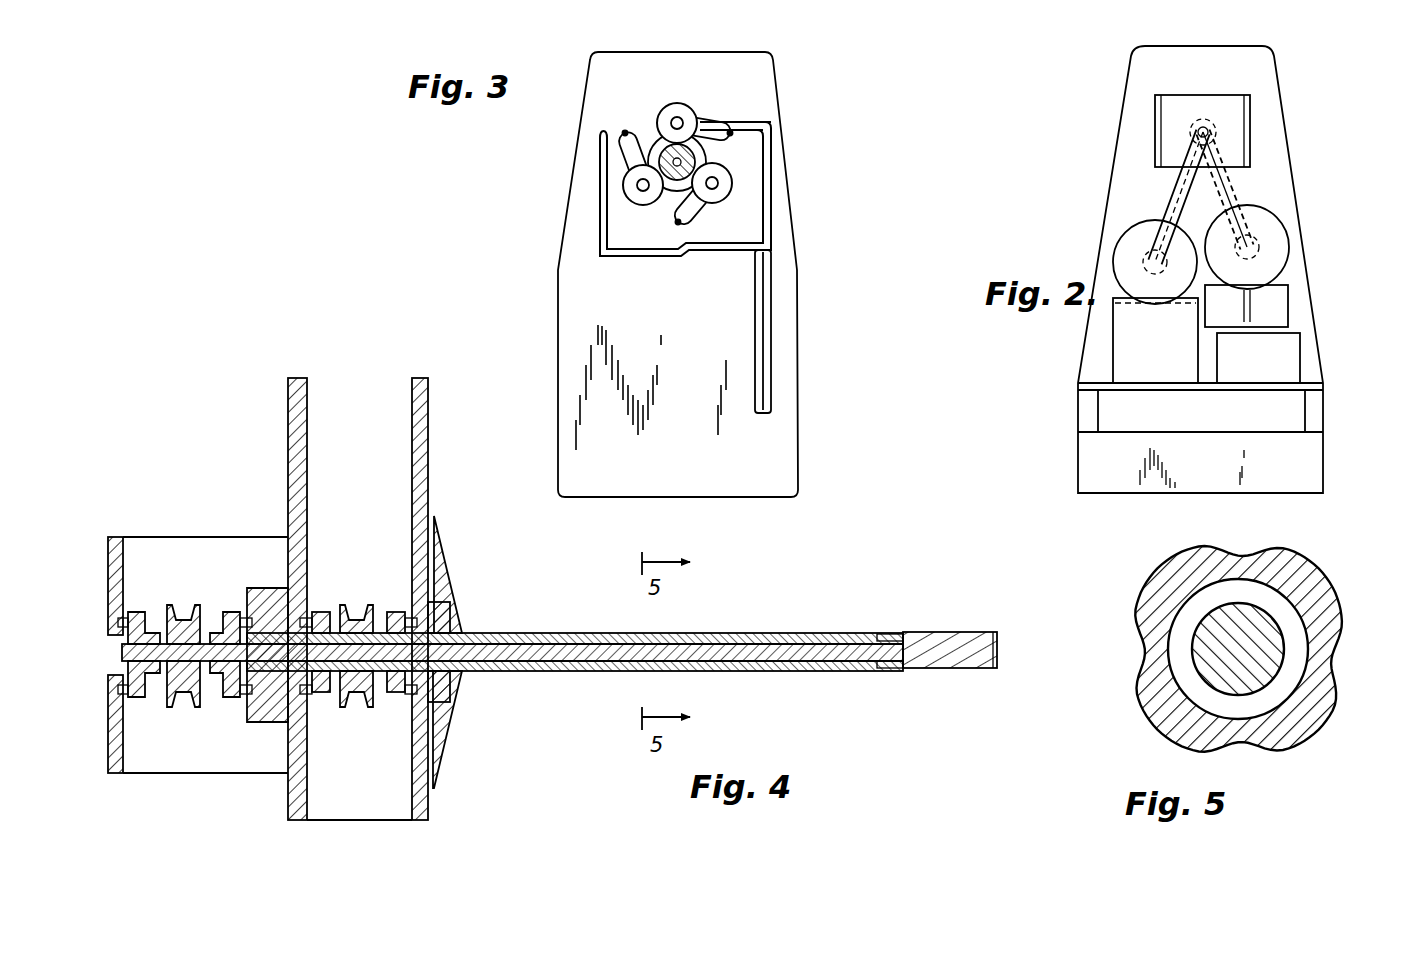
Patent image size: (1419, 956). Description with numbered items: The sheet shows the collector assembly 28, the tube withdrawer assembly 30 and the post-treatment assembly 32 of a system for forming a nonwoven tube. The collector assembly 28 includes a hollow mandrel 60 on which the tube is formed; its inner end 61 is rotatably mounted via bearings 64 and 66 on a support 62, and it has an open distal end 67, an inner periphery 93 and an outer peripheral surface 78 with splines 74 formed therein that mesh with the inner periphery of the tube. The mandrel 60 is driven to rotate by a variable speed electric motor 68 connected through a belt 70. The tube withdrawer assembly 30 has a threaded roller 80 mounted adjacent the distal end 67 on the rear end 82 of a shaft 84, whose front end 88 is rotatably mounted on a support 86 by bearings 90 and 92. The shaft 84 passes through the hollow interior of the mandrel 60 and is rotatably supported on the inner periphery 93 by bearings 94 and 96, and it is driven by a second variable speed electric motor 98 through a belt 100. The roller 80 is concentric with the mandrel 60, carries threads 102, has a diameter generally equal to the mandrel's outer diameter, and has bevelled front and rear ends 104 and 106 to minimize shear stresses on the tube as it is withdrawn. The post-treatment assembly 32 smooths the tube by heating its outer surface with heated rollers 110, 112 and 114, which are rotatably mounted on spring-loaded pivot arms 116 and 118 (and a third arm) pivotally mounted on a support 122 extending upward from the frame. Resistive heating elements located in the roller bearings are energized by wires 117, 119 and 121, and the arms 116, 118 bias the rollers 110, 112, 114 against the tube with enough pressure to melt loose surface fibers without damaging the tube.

In FIG. 4, the collector assembly 28 is at (468, 583).
In FIG. 4, the tube withdrawer assembly 30 is at (246, 518).
In FIG. 3, the post-treatment assembly 32 is at (640, 84).
In FIG. 4, the mandrel 60 is at (754, 629).
In FIG. 5, the mandrel 60 is at (1341, 590).
In FIG. 4, the inner end 61 is at (378, 604).
In FIG. 2, the support 62 is at (1263, 57).
In FIG. 4, the support 62 is at (430, 804).
In FIG. 4, the bearing 64 is at (322, 697).
In FIG. 4, the bearing 66 is at (397, 694).
In FIG. 4, the distal end 67 is at (882, 669).
In FIG. 2, the variable speed electric motor 68 is at (1130, 232).
In FIG. 2, the belt 70 is at (1168, 182).
In FIG. 5, the splines 74 is at (1336, 650).
In FIG. 4, the outer peripheral surface 78 is at (545, 672).
In FIG. 5, the outer peripheral surface 78 is at (1175, 566).
In FIG. 4, the threaded roller 80 is at (957, 675).
In FIG. 4, the rear end 82 is at (905, 670).
In FIG. 4, the shaft 84 is at (562, 630).
In FIG. 5, the shaft 84 is at (1163, 702).
In FIG. 2, the support 86 is at (1237, 116).
In FIG. 4, the support 86 is at (117, 540).
In FIG. 4, the front end 88 is at (122, 653).
In FIG. 4, the bearing 90 is at (133, 698).
In FIG. 4, the bearing 92 is at (233, 700).
In FIG. 4, the inner periphery 93 is at (744, 654).
In FIG. 5, the inner periphery 93 is at (1292, 582).
In FIG. 4, the bearing 94 is at (881, 635).
In FIG. 4, the bearing 96 is at (268, 610).
In FIG. 2, the variable speed electric motor 98 is at (1280, 243).
In FIG. 2, the belt 100 is at (1246, 188).
In FIG. 4, the threads 102 is at (937, 630).
In FIG. 4, the front end 104 is at (903, 633).
In FIG. 4, the rear end 106 is at (993, 632).
In FIG. 3, the heated roller 110 is at (679, 107).
In FIG. 3, the heated roller 112 is at (633, 196).
In FIG. 3, the heated roller 114 is at (728, 180).
In FIG. 3, the spring-loaded pivot arm 116 is at (717, 122).
In FIG. 3, the wire 117 is at (770, 128).
In FIG. 3, the spring-loaded pivot arm 118 is at (604, 144).
In FIG. 3, the wire 119 is at (684, 243).
In FIG. 3, the wire 121 is at (602, 174).
In FIG. 3, the support 122 is at (795, 258).